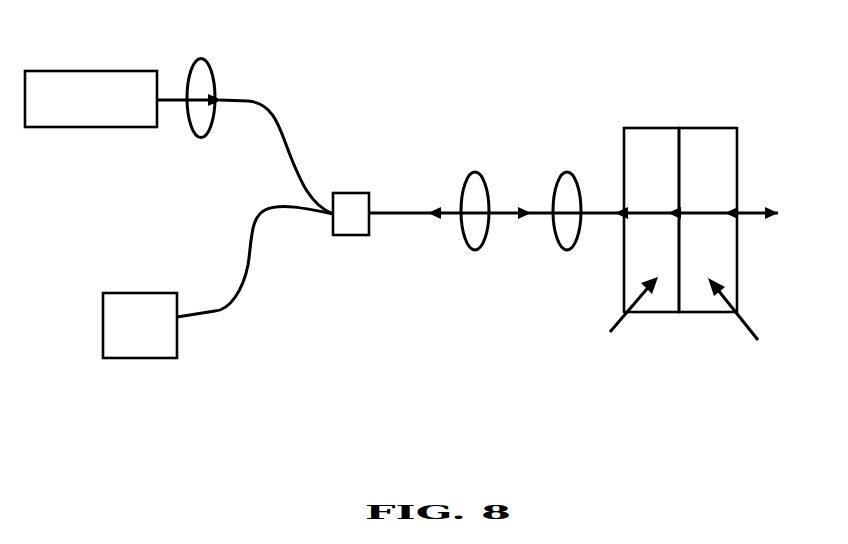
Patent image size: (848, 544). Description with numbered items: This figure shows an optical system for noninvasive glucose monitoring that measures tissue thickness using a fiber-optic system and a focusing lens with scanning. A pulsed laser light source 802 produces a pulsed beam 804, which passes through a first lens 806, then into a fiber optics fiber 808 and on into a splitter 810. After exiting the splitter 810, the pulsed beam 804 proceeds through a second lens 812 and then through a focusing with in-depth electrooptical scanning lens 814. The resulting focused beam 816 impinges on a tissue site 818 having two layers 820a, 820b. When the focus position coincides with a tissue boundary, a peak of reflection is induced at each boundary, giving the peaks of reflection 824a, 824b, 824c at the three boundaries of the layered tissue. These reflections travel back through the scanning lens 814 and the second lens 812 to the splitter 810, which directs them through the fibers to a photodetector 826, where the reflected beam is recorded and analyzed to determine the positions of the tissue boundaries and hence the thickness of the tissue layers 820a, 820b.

The pulsed laser light source 802 is at (91, 99).
The pulsed beam 804 is at (177, 103).
The first lens 806 is at (217, 78).
The fiber optics fiber 808 is at (287, 137).
The splitter 810 is at (353, 213).
The second lens 812 is at (462, 192).
The focusing with in-depth electrooptical scanning lens 814 is at (552, 235).
The focused beam 816 is at (597, 211).
The tissue site 818 is at (242, 285).
The tissue layer 820a is at (649, 216).
The tissue layer 820b is at (746, 247).
The peak of reflection 824a is at (617, 216).
The peak of reflection 824b is at (680, 207).
The peak of reflection 824c is at (733, 220).
The photodetector 826 is at (140, 325).